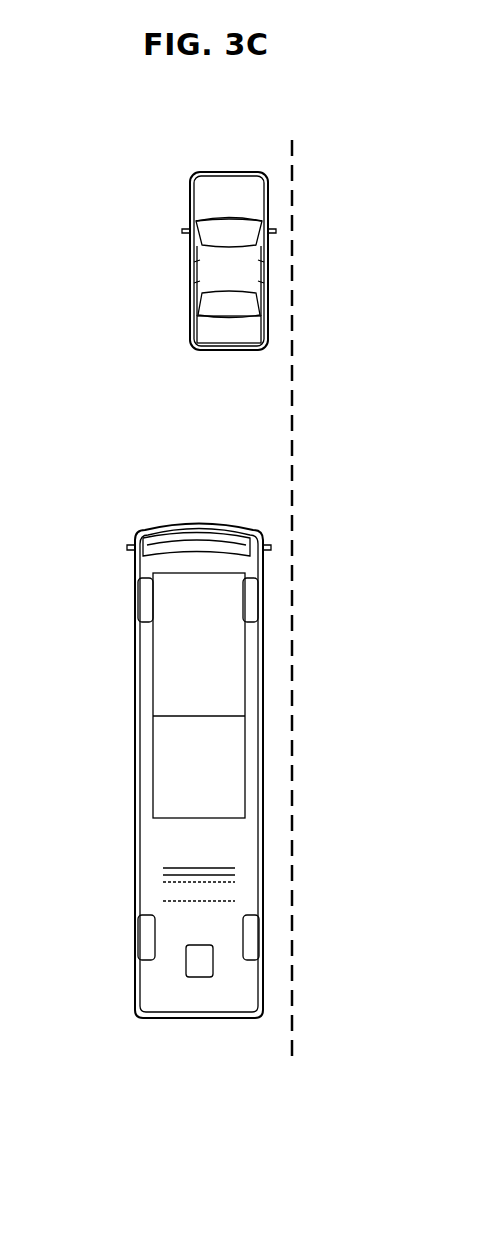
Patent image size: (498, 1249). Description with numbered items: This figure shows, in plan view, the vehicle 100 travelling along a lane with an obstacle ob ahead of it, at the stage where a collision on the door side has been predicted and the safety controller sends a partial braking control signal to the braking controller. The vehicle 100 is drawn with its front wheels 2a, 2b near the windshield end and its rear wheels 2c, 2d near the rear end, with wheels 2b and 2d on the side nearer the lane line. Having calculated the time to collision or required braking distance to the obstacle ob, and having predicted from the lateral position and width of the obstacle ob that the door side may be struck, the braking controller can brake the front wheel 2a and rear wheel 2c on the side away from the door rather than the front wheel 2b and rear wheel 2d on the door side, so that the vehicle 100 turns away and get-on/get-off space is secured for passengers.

The obstacle ob is at (227, 182).
The vehicle 100 is at (146, 680).
The front wheel 2a is at (138, 597).
The front wheel 2b is at (258, 596).
The rear wheel 2c is at (138, 933).
The rear wheel 2d is at (259, 928).